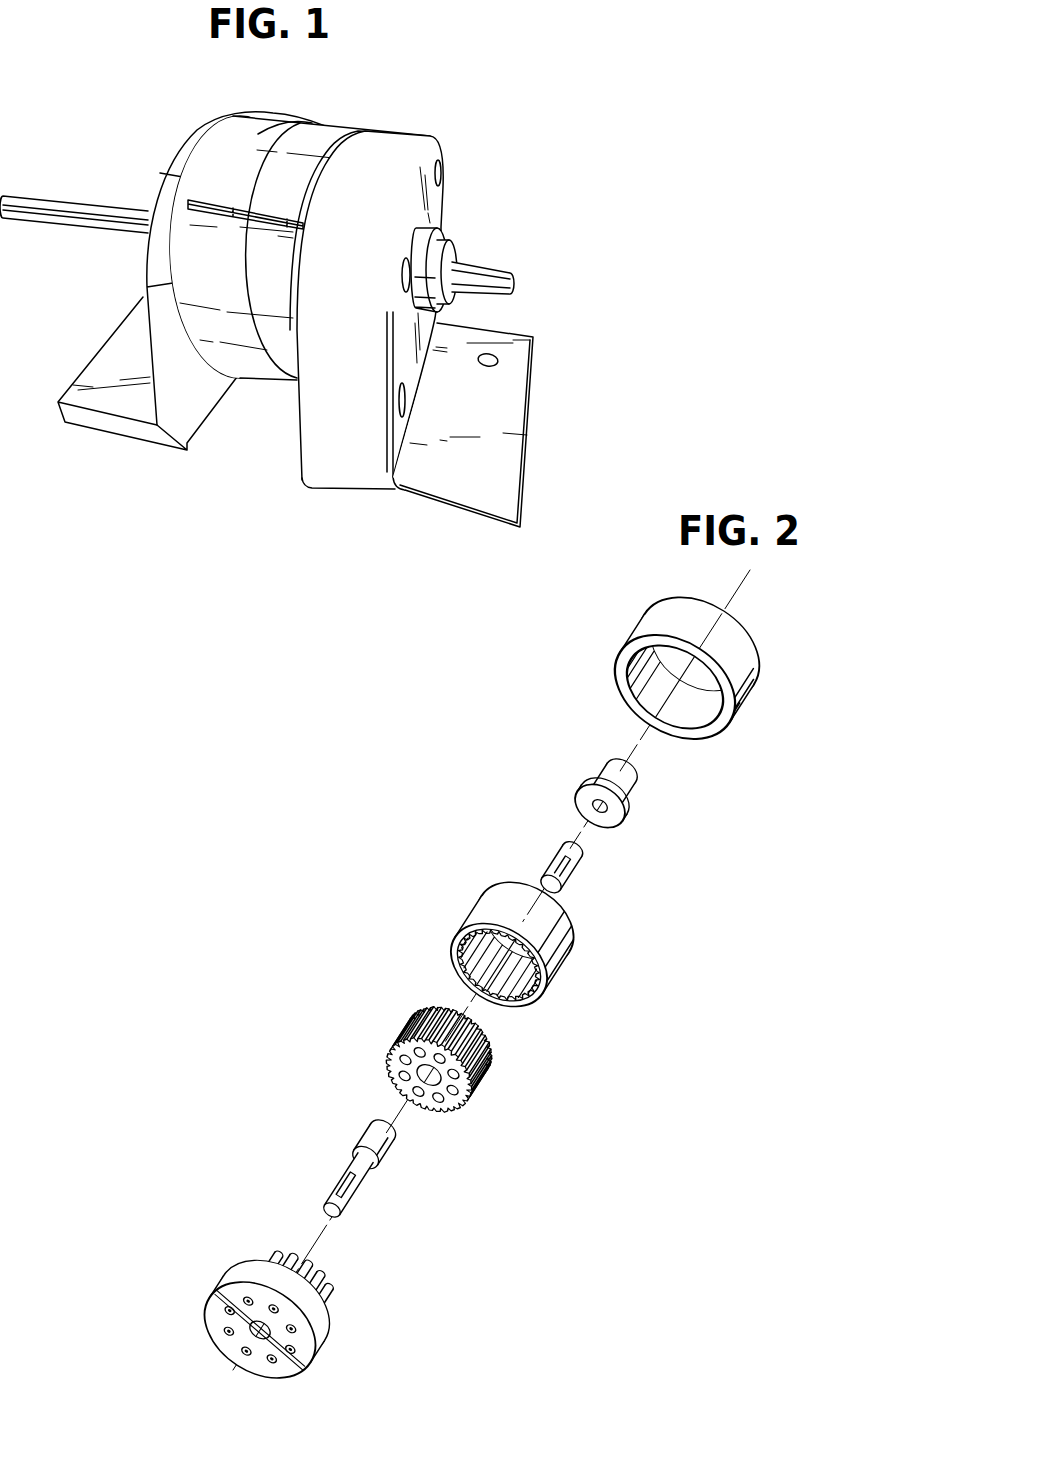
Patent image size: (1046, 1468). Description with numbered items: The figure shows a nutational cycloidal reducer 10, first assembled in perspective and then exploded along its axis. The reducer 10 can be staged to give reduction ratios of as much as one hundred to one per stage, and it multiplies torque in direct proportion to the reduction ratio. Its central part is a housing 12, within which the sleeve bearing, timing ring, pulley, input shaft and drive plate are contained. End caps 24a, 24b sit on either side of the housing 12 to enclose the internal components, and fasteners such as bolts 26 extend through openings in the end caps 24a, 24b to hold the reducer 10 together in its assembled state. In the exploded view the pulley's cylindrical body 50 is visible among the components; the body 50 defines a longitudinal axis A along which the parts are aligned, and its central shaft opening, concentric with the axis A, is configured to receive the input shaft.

In FIG. 1, the nutational cycloidal reducer 10 is at (266, 282).
In FIG. 1, the housing 12 is at (286, 269).
In FIG. 1, the end cap 24a is at (153, 263).
In FIG. 1, the end cap 24b is at (387, 128).
In FIG. 1, the bolt 26 is at (217, 198).
In FIG. 2, the longitudinal axis A is at (483, 1007).
In FIG. 2, the cylindrical body 50 is at (511, 973).